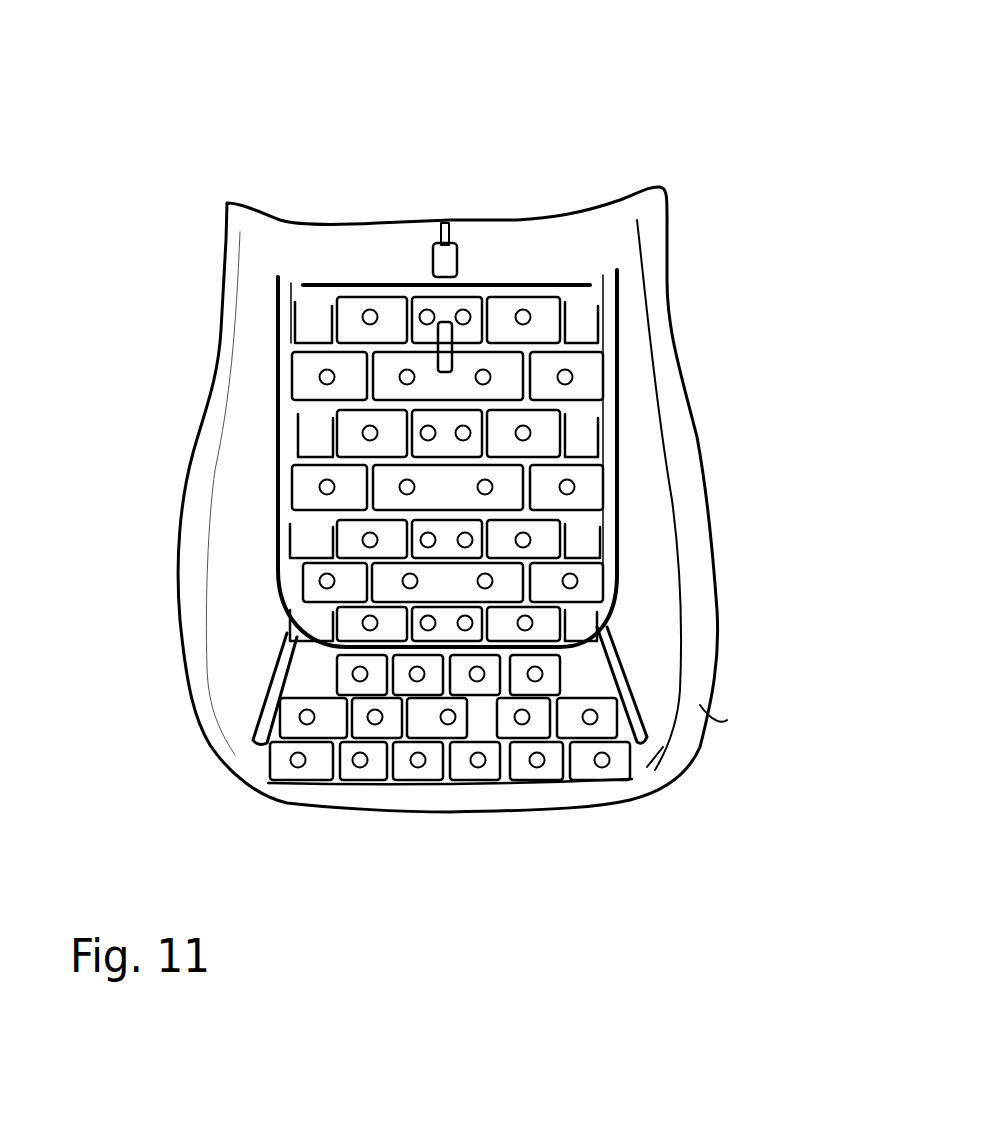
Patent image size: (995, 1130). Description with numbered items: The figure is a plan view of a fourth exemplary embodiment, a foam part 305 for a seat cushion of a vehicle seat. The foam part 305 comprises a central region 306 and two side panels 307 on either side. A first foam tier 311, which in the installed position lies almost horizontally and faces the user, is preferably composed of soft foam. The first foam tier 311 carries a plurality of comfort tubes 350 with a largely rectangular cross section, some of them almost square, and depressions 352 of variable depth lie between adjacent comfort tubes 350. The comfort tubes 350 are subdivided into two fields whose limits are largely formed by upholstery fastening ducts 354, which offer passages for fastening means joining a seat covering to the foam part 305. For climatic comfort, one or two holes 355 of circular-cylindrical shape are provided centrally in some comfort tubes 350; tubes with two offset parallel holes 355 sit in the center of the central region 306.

The foam part 305 is at (192, 92).
The central region 306 is at (480, 768).
The side panels 307 is at (230, 563).
The first foam tier 311 is at (727, 720).
The comfort tubes 350 is at (587, 367).
The depressions 352 is at (320, 353).
The upholstery fastening ducts 354 is at (285, 630).
The holes 355 is at (405, 482).